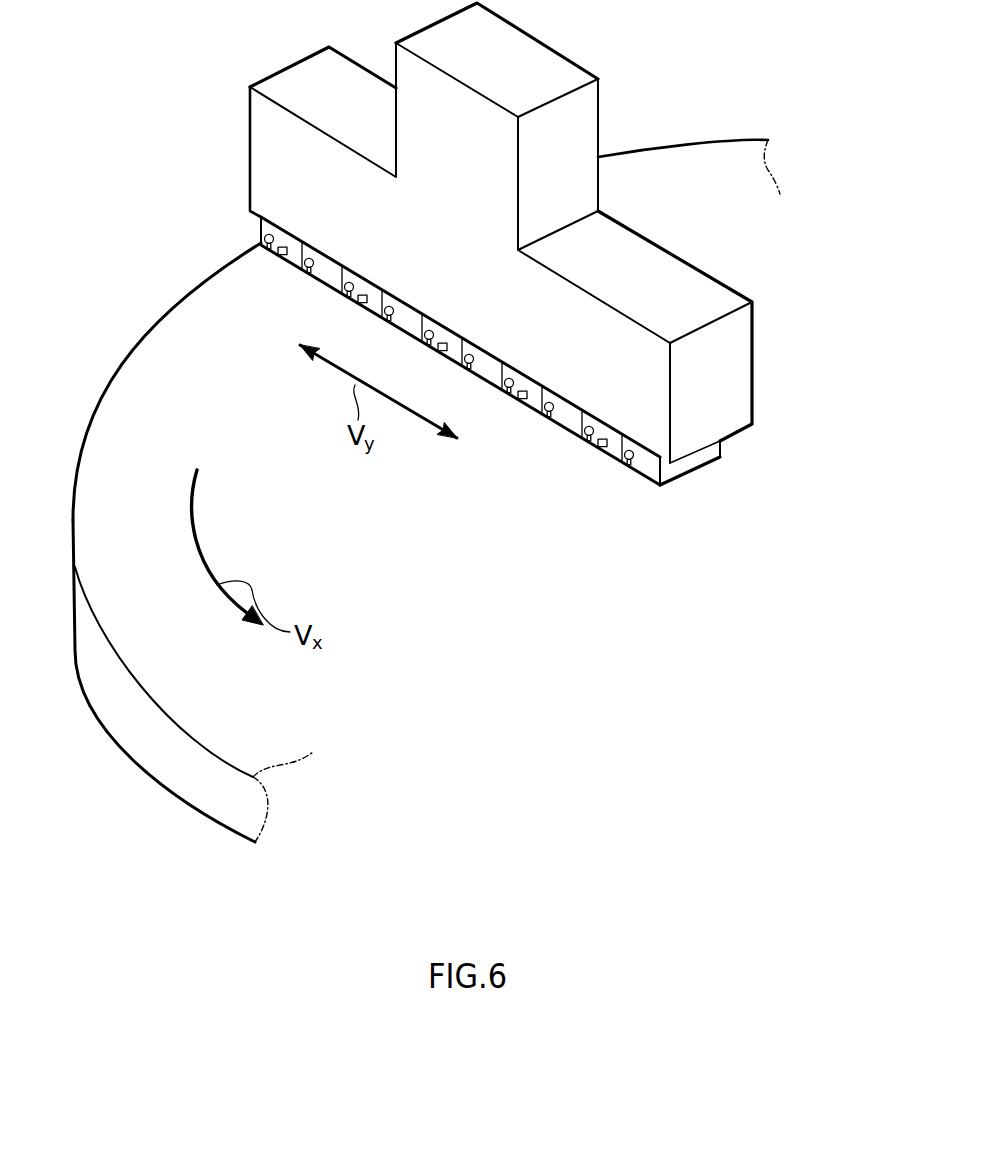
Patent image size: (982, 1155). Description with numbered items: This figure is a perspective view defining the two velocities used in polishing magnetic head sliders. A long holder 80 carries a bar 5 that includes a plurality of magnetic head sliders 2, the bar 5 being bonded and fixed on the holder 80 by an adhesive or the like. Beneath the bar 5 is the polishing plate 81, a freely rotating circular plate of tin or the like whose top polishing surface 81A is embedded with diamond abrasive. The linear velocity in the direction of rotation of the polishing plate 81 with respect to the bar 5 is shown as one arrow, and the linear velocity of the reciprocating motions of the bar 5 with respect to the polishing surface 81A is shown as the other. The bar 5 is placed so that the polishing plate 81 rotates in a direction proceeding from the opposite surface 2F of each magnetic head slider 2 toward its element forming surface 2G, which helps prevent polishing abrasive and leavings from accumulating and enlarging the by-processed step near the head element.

The holder 80 is at (268, 135).
The polishing plate 81 is at (178, 767).
The polishing surface 81A is at (166, 330).
The magnetic head slider 2 is at (573, 447).
The opposite surface 2F is at (731, 440).
The element forming surface 2G is at (645, 472).
The bar 5 is at (702, 455).